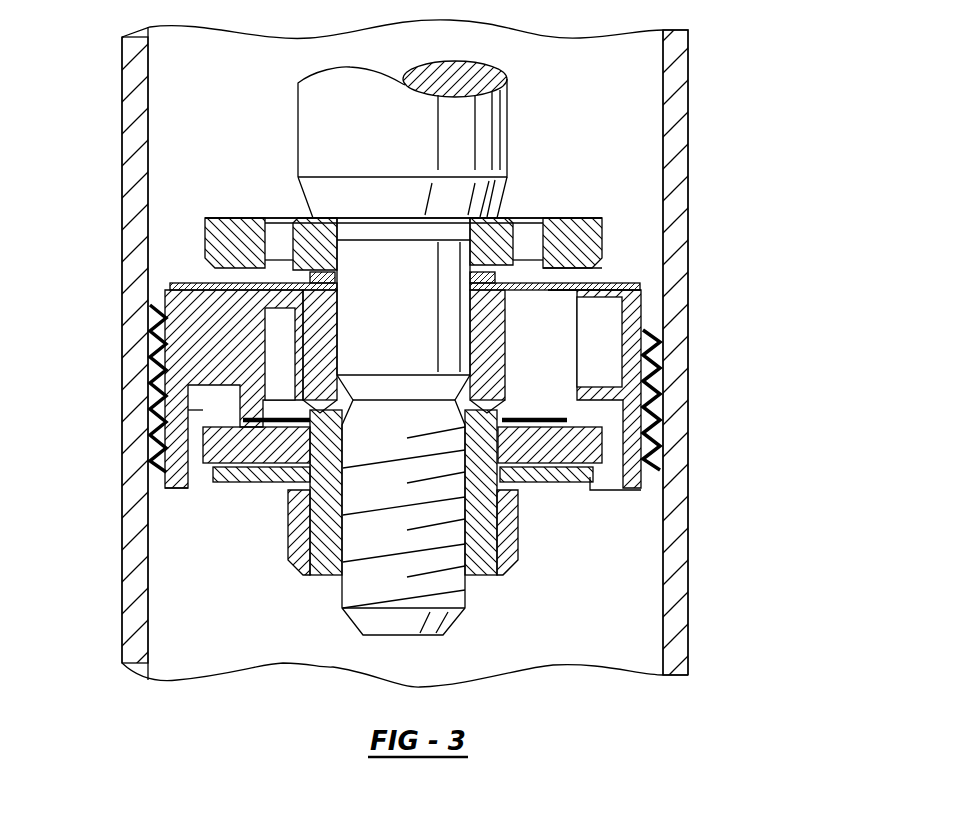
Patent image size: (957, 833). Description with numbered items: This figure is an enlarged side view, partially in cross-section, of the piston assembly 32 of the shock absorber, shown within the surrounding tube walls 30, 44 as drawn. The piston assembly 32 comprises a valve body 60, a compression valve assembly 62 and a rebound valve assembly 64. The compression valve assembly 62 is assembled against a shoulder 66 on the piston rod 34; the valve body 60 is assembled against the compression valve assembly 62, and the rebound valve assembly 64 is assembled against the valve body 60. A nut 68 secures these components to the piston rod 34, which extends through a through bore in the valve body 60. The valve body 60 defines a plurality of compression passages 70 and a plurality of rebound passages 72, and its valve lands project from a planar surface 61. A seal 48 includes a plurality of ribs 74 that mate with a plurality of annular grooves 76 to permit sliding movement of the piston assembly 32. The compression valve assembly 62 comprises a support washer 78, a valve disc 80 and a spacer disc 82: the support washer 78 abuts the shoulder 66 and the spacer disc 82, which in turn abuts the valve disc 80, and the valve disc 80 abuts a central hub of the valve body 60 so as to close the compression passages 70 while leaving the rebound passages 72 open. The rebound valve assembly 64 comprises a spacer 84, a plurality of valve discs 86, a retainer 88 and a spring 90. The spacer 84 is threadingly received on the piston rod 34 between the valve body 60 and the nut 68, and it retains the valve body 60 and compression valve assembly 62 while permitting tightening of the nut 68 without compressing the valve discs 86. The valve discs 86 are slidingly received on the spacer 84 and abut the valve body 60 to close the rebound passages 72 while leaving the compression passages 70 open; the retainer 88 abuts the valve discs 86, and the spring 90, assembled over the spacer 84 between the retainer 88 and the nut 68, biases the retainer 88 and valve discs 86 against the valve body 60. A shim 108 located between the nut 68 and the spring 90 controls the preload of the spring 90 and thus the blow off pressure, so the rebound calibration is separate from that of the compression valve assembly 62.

The first panel 30 is at (675, 95).
The piston assembly 32 is at (253, 575).
The piston rod 34 is at (396, 139).
The second panel 44 is at (619, 89).
The seal 48 is at (650, 463).
The valve body 60 is at (650, 340).
The planar surface 61 is at (242, 282).
The compression valve assembly 62 is at (628, 228).
The rebound valve assembly 64 is at (257, 493).
The shoulder 66 is at (322, 221).
The nut 68 is at (488, 565).
The compression passages 70 is at (612, 322).
The rebound passages 72 is at (283, 340).
The ribs 74 is at (157, 433).
The annular grooves 76 is at (158, 378).
The support washer 78 is at (500, 243).
The valve disc 80 is at (640, 292).
The spacer disc 82 is at (585, 277).
The spacer 84 is at (490, 447).
The valve discs 86 is at (240, 412).
The retainer 88 is at (225, 468).
The spring 90 is at (245, 455).
The shim 108 is at (540, 421).